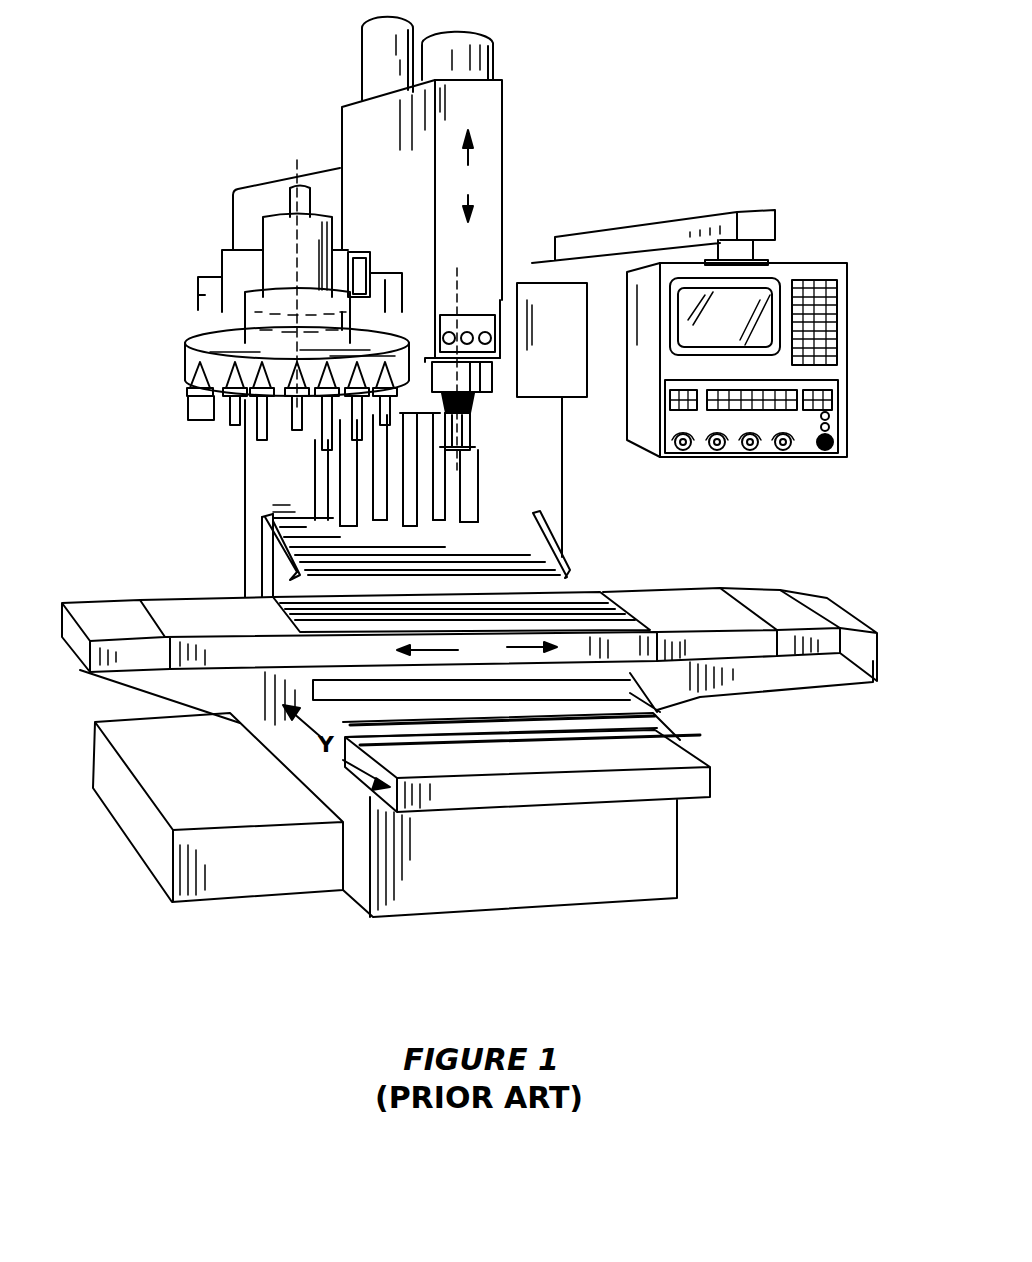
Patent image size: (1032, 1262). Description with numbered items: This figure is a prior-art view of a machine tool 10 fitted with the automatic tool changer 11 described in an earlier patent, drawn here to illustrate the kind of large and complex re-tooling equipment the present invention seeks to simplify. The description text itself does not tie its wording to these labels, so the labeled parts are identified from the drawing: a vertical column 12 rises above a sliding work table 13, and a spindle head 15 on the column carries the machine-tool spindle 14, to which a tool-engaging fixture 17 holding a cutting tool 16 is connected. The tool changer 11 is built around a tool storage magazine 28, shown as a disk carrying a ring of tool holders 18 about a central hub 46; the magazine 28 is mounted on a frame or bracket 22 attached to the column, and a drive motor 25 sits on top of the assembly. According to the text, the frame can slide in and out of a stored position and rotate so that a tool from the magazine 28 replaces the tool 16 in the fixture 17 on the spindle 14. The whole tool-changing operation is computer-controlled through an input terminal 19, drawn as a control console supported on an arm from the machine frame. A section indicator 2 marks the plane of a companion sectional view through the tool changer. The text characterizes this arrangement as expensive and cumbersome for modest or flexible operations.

The machine tool 10 is at (582, 152).
The automatic tool changer 11 is at (213, 233).
The column 12 is at (325, 473).
The work table 13 is at (573, 598).
The spindle 14 is at (480, 387).
The spindle head 15 is at (455, 290).
The cutting tool 16 is at (468, 440).
The tool holder 17 is at (478, 388).
The tool holders in magazine 18 is at (188, 372).
The CNC control unit 19 is at (830, 372).
The tool changer support bracket 22 is at (216, 280).
The drive motor 25 is at (273, 233).
The tool magazine disk 28 is at (192, 345).
The magazine hub 46 is at (212, 329).
The section line 2- 2 is at (127, 342).